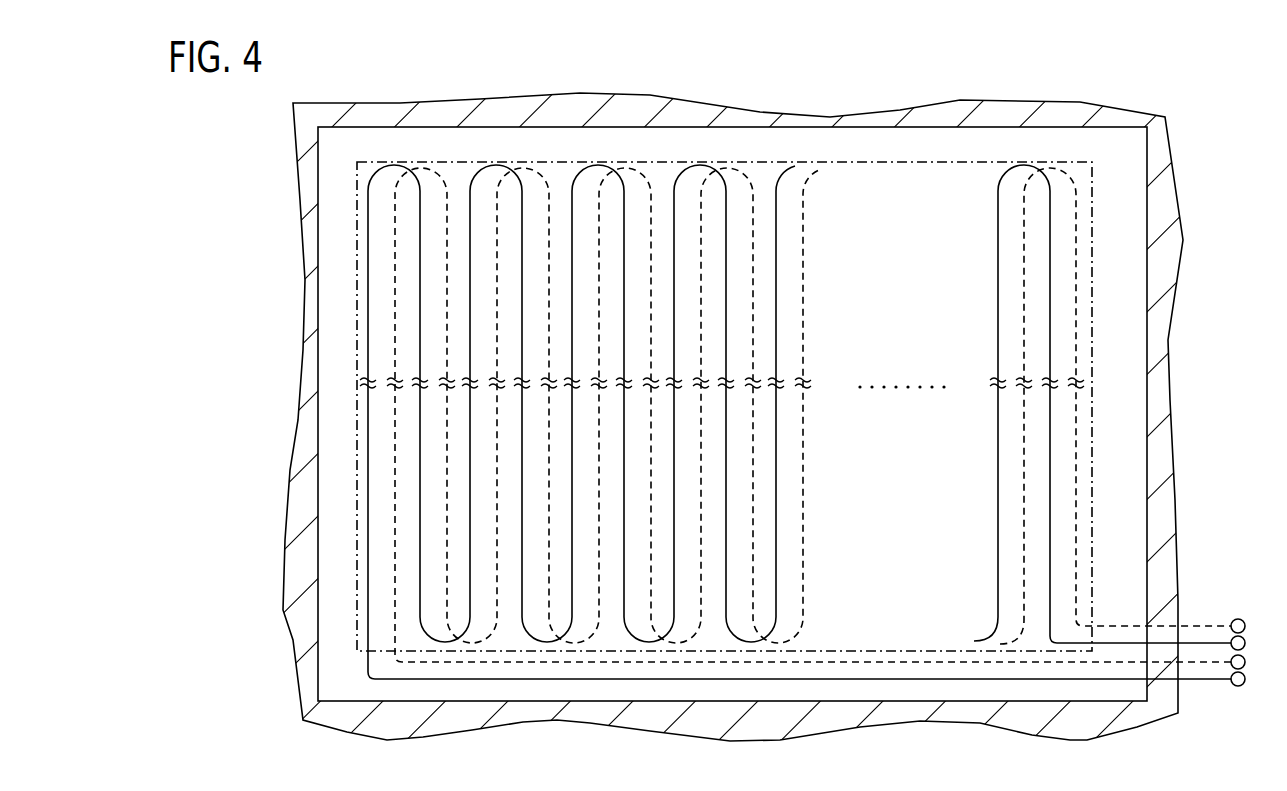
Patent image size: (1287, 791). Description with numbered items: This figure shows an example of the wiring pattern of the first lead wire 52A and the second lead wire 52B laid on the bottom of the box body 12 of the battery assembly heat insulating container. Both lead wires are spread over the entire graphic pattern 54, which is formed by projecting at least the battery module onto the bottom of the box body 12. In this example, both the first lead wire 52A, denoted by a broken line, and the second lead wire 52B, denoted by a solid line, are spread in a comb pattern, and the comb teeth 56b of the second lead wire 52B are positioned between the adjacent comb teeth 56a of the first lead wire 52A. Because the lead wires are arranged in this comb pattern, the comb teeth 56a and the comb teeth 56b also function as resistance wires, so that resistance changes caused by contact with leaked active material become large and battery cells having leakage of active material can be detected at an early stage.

The box body 12 is at (1169, 321).
The first lead wire 52A is at (806, 251).
The second lead wire 52B is at (778, 317).
The graphic pattern 54 is at (1093, 278).
The comb teeth of the first lead wire 56a is at (393, 257).
The comb teeth of the second lead wire 56b is at (366, 279).